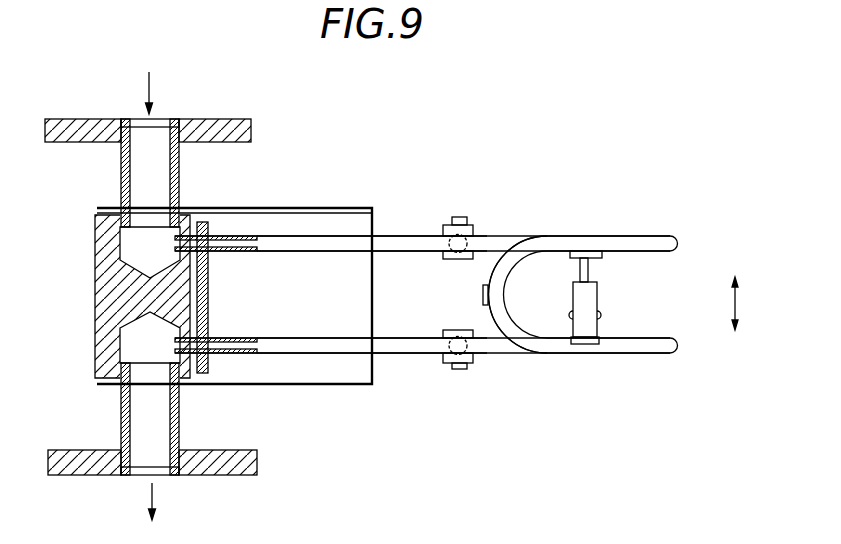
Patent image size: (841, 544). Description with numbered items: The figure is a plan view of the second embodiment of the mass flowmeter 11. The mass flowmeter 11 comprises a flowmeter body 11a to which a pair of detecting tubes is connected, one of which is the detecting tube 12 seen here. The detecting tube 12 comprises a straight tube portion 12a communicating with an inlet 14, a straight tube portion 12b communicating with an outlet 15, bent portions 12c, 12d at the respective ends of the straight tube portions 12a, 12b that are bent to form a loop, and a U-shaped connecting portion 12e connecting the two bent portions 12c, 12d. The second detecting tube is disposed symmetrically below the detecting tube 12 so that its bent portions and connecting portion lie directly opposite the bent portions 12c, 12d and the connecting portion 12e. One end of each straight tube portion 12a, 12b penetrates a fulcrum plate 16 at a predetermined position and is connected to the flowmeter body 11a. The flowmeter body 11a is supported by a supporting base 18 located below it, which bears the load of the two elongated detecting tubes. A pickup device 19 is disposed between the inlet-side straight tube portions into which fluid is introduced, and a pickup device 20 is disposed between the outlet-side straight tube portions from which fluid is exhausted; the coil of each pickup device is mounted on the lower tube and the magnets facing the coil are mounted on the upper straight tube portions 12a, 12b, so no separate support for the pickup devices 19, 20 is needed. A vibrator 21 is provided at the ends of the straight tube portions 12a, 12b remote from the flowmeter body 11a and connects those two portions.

The mass flowmeter 11 is at (536, 132).
The flowmeter body 11a is at (96, 287).
The detecting tube 12 is at (604, 231).
The straight tube portion 12a is at (398, 236).
The straight tube portion 12b is at (400, 355).
The bent portion 12c is at (640, 252).
The bent portion 12d is at (663, 354).
The U-shaped connecting portion 12e is at (488, 270).
The inlet 14 is at (155, 140).
The outlet 15 is at (160, 452).
The fulcrum plate 16 is at (208, 308).
The supporting base 18 is at (305, 385).
The pickup device 19 is at (485, 225).
The pickup device 20 is at (479, 365).
The vibrator 21 is at (590, 302).